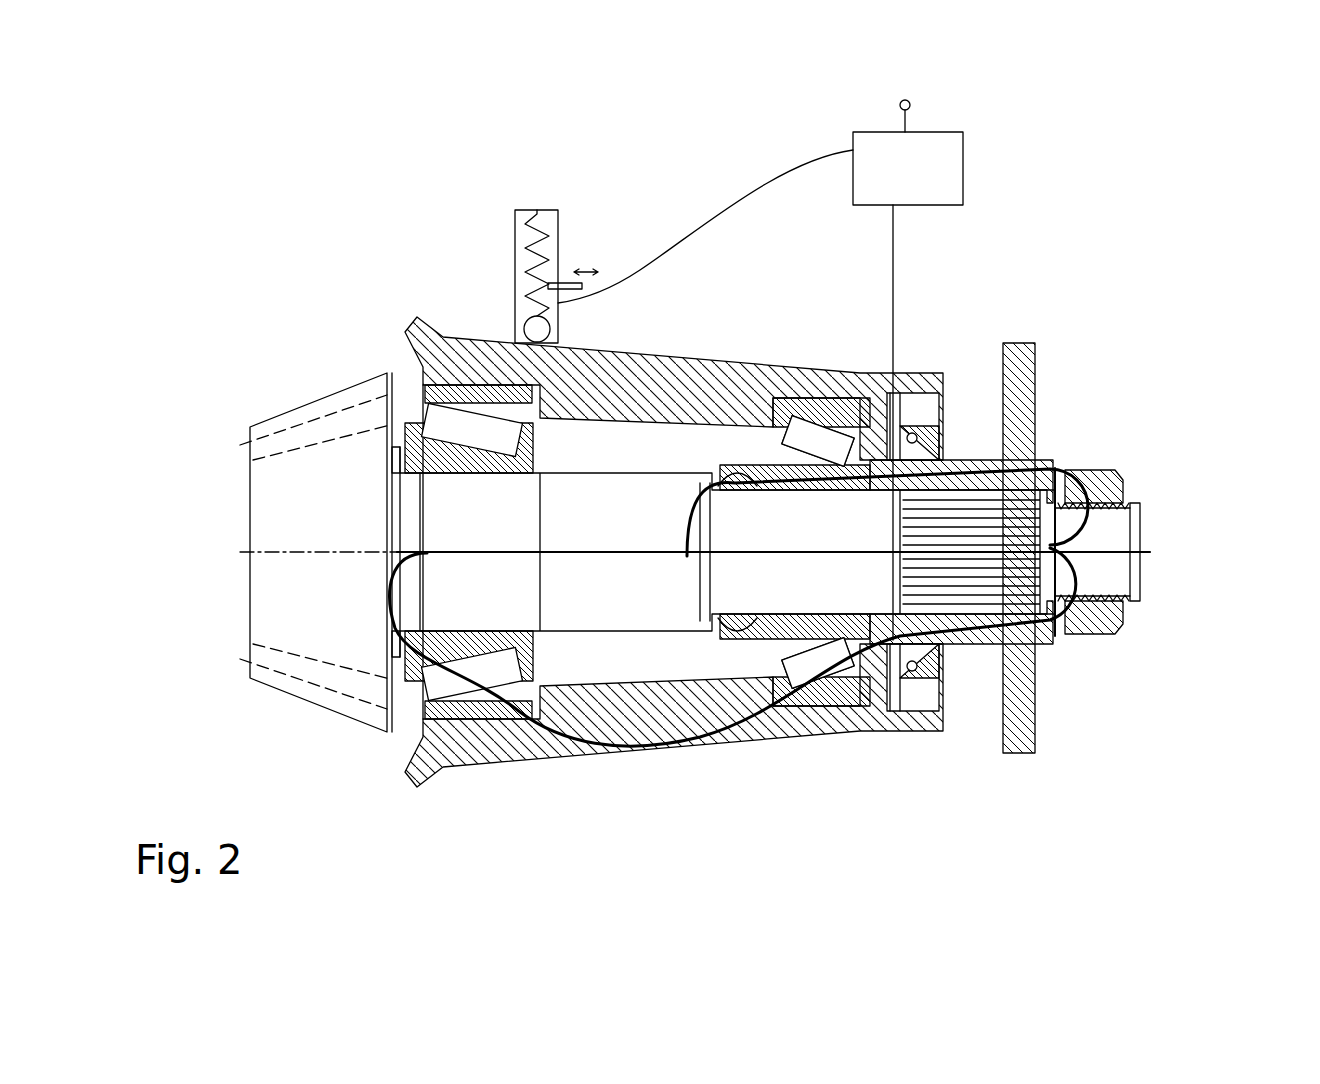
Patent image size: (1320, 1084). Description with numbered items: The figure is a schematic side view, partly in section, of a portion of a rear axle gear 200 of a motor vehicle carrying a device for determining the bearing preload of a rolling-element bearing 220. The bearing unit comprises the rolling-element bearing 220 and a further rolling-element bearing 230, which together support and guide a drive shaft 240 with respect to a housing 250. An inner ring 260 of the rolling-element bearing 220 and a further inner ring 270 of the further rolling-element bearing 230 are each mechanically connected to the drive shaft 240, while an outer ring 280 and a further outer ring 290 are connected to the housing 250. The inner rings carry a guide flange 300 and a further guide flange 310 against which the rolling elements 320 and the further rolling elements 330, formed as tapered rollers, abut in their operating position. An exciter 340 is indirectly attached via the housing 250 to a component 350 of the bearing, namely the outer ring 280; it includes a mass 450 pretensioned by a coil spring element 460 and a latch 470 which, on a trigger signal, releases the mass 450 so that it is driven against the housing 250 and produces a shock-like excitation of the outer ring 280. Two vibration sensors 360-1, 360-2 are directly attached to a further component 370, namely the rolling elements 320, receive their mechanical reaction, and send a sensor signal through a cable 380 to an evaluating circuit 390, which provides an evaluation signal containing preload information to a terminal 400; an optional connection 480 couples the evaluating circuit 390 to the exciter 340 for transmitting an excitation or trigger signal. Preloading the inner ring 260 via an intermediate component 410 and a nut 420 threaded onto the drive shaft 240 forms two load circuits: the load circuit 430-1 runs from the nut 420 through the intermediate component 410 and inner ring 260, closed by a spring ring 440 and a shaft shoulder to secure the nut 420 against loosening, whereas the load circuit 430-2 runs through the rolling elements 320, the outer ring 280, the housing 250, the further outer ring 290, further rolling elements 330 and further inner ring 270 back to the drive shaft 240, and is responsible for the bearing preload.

The rear axle gear 200 is at (1160, 148).
The rolling-element bearing 220 is at (790, 397).
The further rolling-element bearing 230 is at (418, 316).
The drive shaft 240 is at (600, 610).
The housing 250 is at (636, 346).
The inner ring 260 is at (773, 463).
The further inner ring 270 is at (397, 423).
The outer ring 280 is at (817, 410).
The further outer ring 290 is at (422, 365).
The guide flange 300 is at (833, 650).
The further guide flange 310 is at (427, 717).
The rolling elements 320 is at (832, 700).
The further rolling elements 330 is at (478, 700).
The exciter 340 is at (548, 211).
The component 350 is at (818, 375).
The vibration sensor 360-1 is at (863, 427).
The vibration sensor 360-2 is at (862, 690).
The further component 370 is at (823, 744).
The cable 380 is at (893, 215).
The evaluating circuit 390 is at (963, 178).
The terminal 400 is at (898, 105).
The intermediate component 410 is at (1027, 404).
The nut 420 is at (1120, 473).
The load circuit 430-1 is at (1140, 510).
The load circuit 430-2 is at (1140, 575).
The spring ring 440 is at (722, 630).
The mass 450 is at (515, 320).
The spring element 460 is at (515, 228).
The latch 470 is at (570, 278).
The connection 480 is at (724, 215).